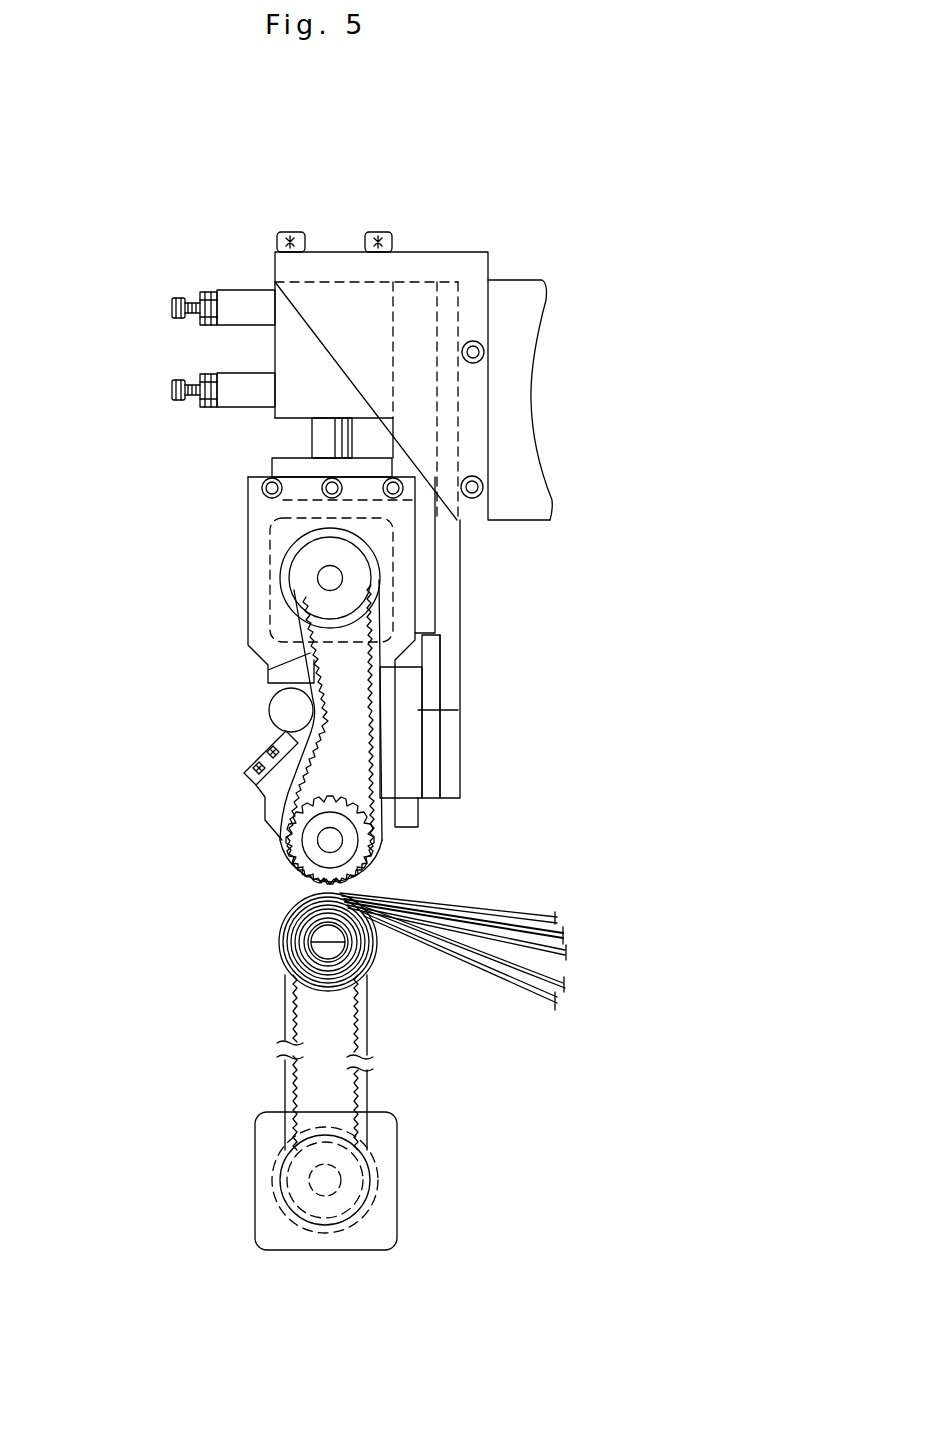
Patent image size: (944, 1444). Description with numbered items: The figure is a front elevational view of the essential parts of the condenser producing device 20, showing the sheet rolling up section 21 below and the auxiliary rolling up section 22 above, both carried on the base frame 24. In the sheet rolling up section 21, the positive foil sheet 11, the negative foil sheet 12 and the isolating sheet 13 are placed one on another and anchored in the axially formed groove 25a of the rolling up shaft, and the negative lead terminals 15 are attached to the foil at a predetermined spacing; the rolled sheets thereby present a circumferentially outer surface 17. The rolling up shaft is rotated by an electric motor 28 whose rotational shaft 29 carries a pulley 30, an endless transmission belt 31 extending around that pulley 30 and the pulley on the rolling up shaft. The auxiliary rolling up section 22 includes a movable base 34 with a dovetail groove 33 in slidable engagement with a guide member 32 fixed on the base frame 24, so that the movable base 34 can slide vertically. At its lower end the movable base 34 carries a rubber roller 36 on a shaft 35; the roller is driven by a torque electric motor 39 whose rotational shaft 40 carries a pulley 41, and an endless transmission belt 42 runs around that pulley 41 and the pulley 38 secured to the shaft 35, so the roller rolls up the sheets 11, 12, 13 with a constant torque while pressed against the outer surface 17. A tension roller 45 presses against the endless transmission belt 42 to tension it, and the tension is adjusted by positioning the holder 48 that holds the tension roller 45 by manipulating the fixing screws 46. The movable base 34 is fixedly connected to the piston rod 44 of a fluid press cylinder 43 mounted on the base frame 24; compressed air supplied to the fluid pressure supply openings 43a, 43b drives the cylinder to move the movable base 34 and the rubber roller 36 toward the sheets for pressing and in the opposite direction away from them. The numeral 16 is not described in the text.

The condenser producing device 20 is at (585, 262).
The auxiliary rolling up section 22 is at (567, 452).
The fluid press cylinder 43 is at (275, 352).
The fluid pressure supply opening 43a is at (193, 297).
The fluid pressure supply opening 43b is at (199, 378).
The piston rod 44 is at (313, 438).
The movable base 34 is at (248, 593).
The electric motor 39 is at (270, 540).
The pulley 41 is at (358, 548).
The rotational shaft 40 is at (338, 578).
The base frame 24 is at (460, 607).
The guide member 32 is at (442, 658).
The dovetail groove 33 is at (420, 710).
The endless transmission belt 42 is at (268, 672).
The rubber roller 36 is at (377, 862).
The tension roller 45 is at (283, 692).
The fixing screws 46 is at (262, 768).
The holder 48 is at (258, 793).
The pulley 38 is at (318, 815).
The shaft 35 is at (322, 848).
The groove 25a is at (378, 932).
The tape roll 16 is at (282, 945).
The negative lead terminals 15 is at (287, 970).
The isolating sheet 13 is at (557, 918).
The positive foil sheet 11 is at (565, 935).
The negative foil sheet 12 is at (567, 987).
The sheet rolling up section 21 is at (291, 1162).
The endless transmission belt 31 is at (285, 1073).
The circumferentially outer surface 17 is at (368, 972).
The electric motor 28 is at (317, 1252).
The pulley 30 is at (350, 1146).
The rotational shaft 29 is at (338, 1183).